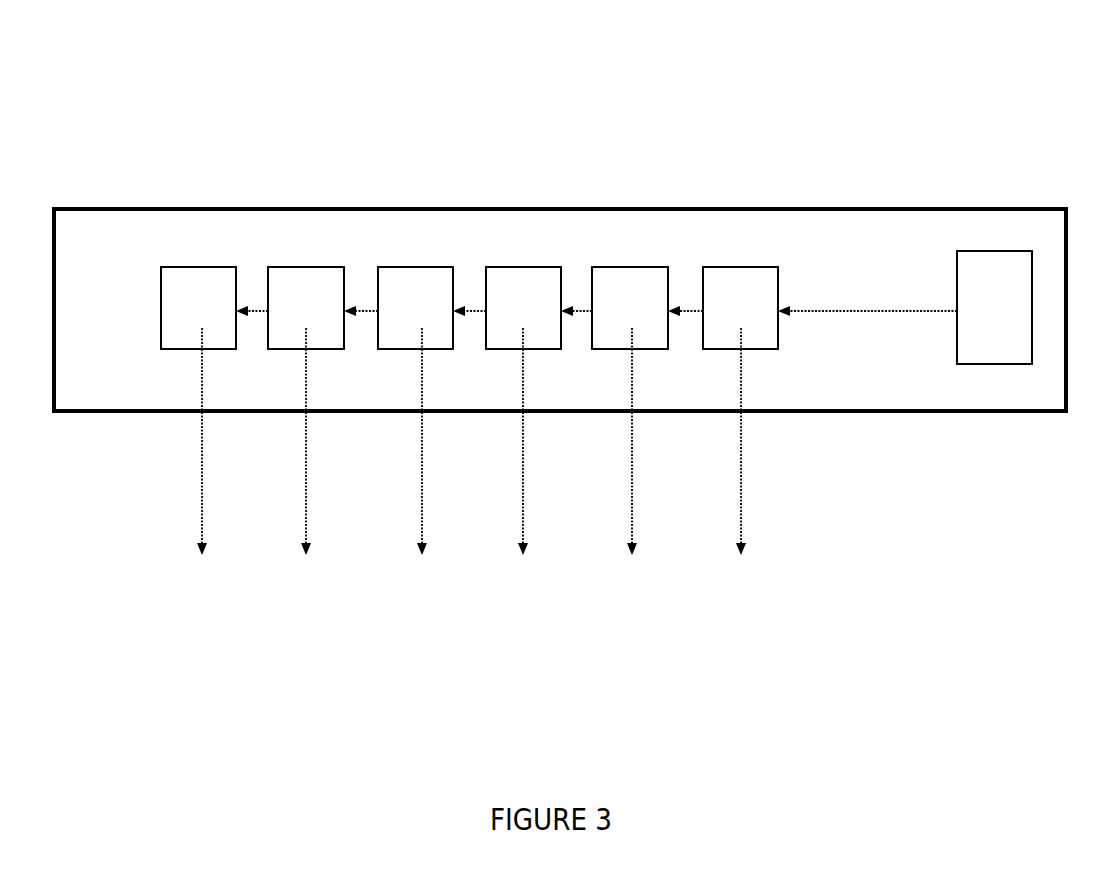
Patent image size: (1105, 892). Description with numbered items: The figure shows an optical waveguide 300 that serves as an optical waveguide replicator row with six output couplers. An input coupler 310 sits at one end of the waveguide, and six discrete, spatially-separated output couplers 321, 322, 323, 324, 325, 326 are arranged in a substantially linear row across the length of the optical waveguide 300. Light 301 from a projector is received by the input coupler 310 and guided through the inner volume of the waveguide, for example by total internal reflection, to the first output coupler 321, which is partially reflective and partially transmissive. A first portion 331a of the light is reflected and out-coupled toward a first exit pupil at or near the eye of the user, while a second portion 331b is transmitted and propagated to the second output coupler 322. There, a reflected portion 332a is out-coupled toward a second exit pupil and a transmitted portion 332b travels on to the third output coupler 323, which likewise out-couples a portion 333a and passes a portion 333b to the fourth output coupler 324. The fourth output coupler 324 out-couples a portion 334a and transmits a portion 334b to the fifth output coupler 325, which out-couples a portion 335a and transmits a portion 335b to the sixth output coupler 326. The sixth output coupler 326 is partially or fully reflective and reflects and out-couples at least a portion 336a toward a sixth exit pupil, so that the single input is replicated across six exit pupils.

The optical waveguide 300 is at (54, 110).
The light 301 is at (1031, 640).
The input coupler 310 is at (1011, 323).
The first output coupler 321 is at (724, 323).
The second output coupler 322 is at (615, 323).
The third output coupler 323 is at (506, 323).
The fourth output coupler 324 is at (403, 323).
The fifth output coupler 325 is at (289, 323).
The sixth output coupler 326 is at (185, 323).
The first portion of light 331a is at (744, 457).
The first portion of light 332a is at (634, 457).
The first portion of light 333a is at (518, 457).
The first portion of light 334a is at (419, 457).
The first portion of light 335a is at (304, 457).
The portion of light 336a is at (203, 457).
The second portion of light 331b is at (692, 310).
The second portion of light 332b is at (583, 310).
The second portion of light 333b is at (477, 310).
The second portion of light 334b is at (370, 310).
The second portion of light 335b is at (260, 310).